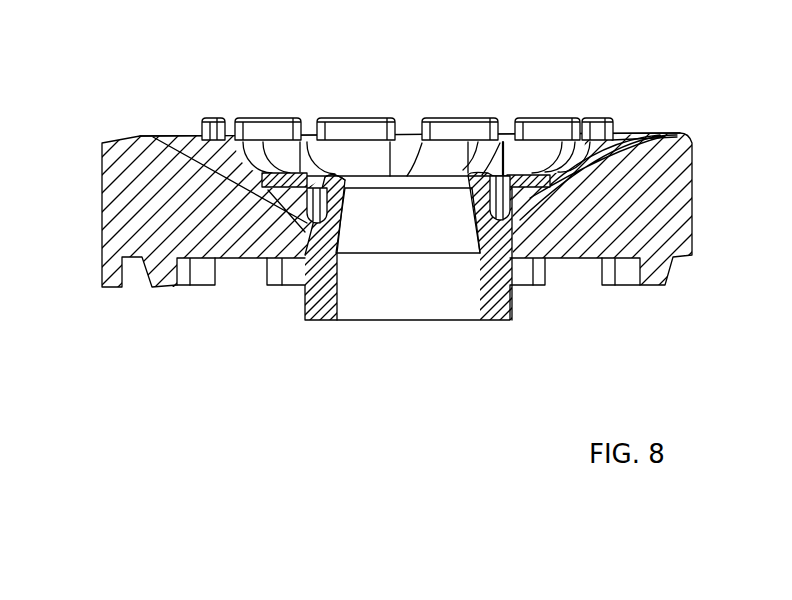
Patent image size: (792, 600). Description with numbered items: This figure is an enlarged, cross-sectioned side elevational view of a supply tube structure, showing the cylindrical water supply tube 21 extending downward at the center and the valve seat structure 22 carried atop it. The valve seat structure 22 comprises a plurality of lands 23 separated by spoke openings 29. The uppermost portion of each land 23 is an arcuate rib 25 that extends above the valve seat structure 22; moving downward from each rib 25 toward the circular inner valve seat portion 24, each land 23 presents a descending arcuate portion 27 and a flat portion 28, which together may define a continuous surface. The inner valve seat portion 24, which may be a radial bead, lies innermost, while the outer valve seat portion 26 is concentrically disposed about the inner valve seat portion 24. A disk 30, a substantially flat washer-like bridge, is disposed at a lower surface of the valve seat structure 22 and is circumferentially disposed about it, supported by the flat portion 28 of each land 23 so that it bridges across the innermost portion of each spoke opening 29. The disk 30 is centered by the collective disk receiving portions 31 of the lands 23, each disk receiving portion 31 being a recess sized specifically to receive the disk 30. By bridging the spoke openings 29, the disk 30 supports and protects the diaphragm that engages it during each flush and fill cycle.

The water supply tube 21 is at (320, 298).
The valve seat structure 22 is at (643, 112).
The land 23 is at (367, 130).
The inner valve seat portion 24 is at (338, 190).
The arcuate rib 25 is at (368, 128).
The outer valve seat portion 26 is at (660, 205).
The descending arcuate portion 27 is at (455, 152).
The flat portion 28 is at (302, 172).
The spoke opening 29 is at (408, 150).
The disk 30 is at (280, 182).
The disk receiving portion 31 is at (297, 180).